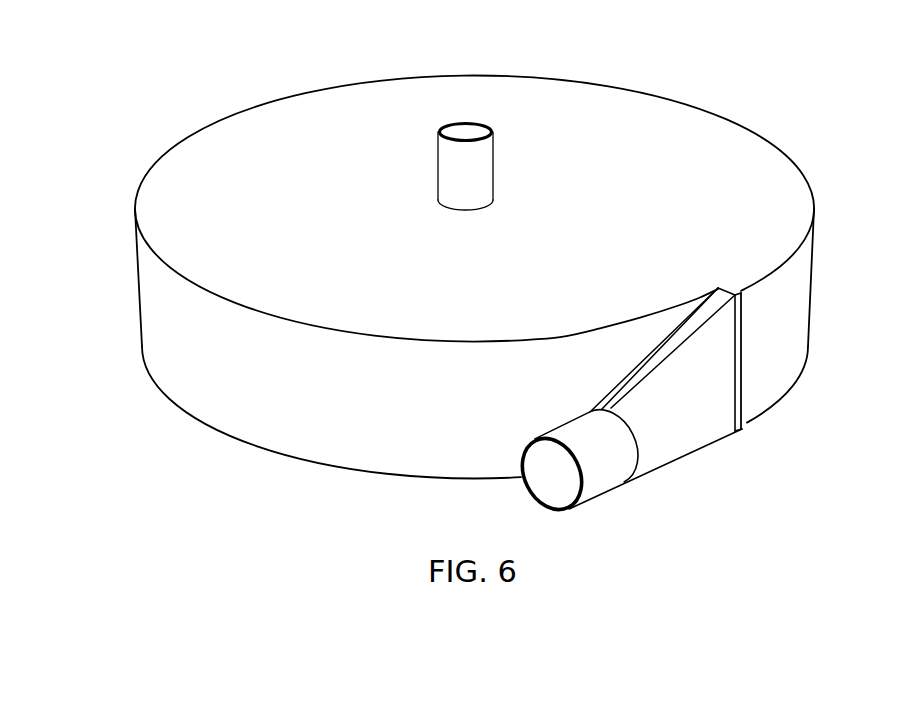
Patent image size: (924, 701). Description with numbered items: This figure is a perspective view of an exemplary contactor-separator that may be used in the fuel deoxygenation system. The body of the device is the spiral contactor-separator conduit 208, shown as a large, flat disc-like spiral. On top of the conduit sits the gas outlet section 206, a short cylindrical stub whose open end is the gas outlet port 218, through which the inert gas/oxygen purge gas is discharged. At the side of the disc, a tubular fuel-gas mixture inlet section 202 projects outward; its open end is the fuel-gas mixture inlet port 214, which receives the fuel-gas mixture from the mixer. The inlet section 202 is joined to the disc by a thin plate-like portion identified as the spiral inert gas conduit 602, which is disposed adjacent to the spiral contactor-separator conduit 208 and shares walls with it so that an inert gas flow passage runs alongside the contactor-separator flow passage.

The spiral contactor-separator conduit 208 is at (678, 121).
The gas outlet section 206 is at (493, 163).
The gas outlet port 218 is at (463, 128).
The fuel-gas mixture inlet section 202 is at (608, 489).
The fuel-gas mixture inlet port 214 is at (550, 493).
The spiral inert gas conduit 602 is at (751, 409).